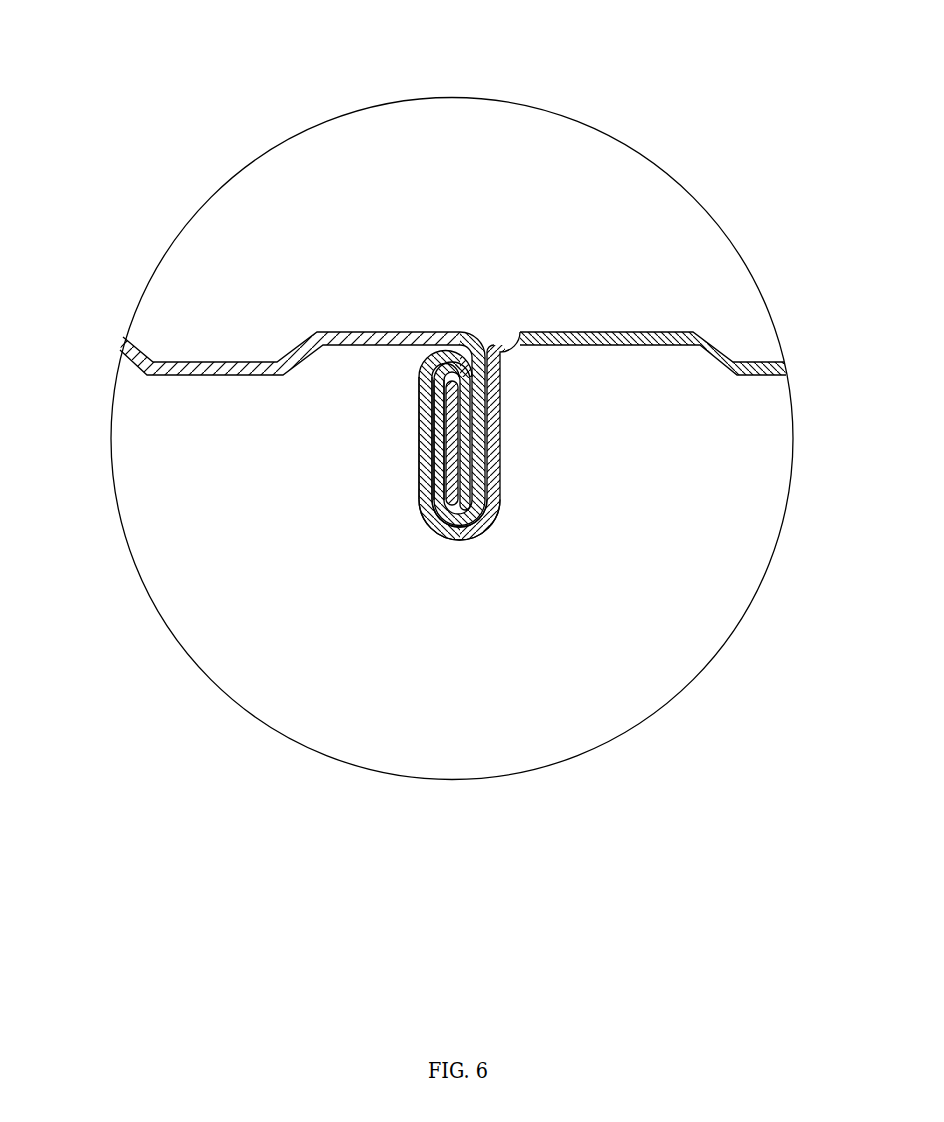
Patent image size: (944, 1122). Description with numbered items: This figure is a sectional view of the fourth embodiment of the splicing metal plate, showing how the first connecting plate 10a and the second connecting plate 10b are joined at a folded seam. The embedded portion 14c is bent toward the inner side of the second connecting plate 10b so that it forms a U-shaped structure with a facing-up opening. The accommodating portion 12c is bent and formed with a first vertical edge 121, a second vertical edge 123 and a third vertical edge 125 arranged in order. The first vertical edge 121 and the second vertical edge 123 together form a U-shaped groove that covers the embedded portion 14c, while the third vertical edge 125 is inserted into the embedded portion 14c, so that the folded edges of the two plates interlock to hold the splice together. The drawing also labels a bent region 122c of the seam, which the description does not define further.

The first connecting plate 10a is at (668, 332).
The second connecting plate 10b is at (247, 362).
The accommodating portion 12c is at (450, 545).
The first vertical edge 121 is at (498, 443).
The bent portion 122c is at (471, 392).
The second vertical edge 123 is at (421, 434).
The third vertical edge 125 is at (447, 465).
The embedded portion 14c is at (432, 490).